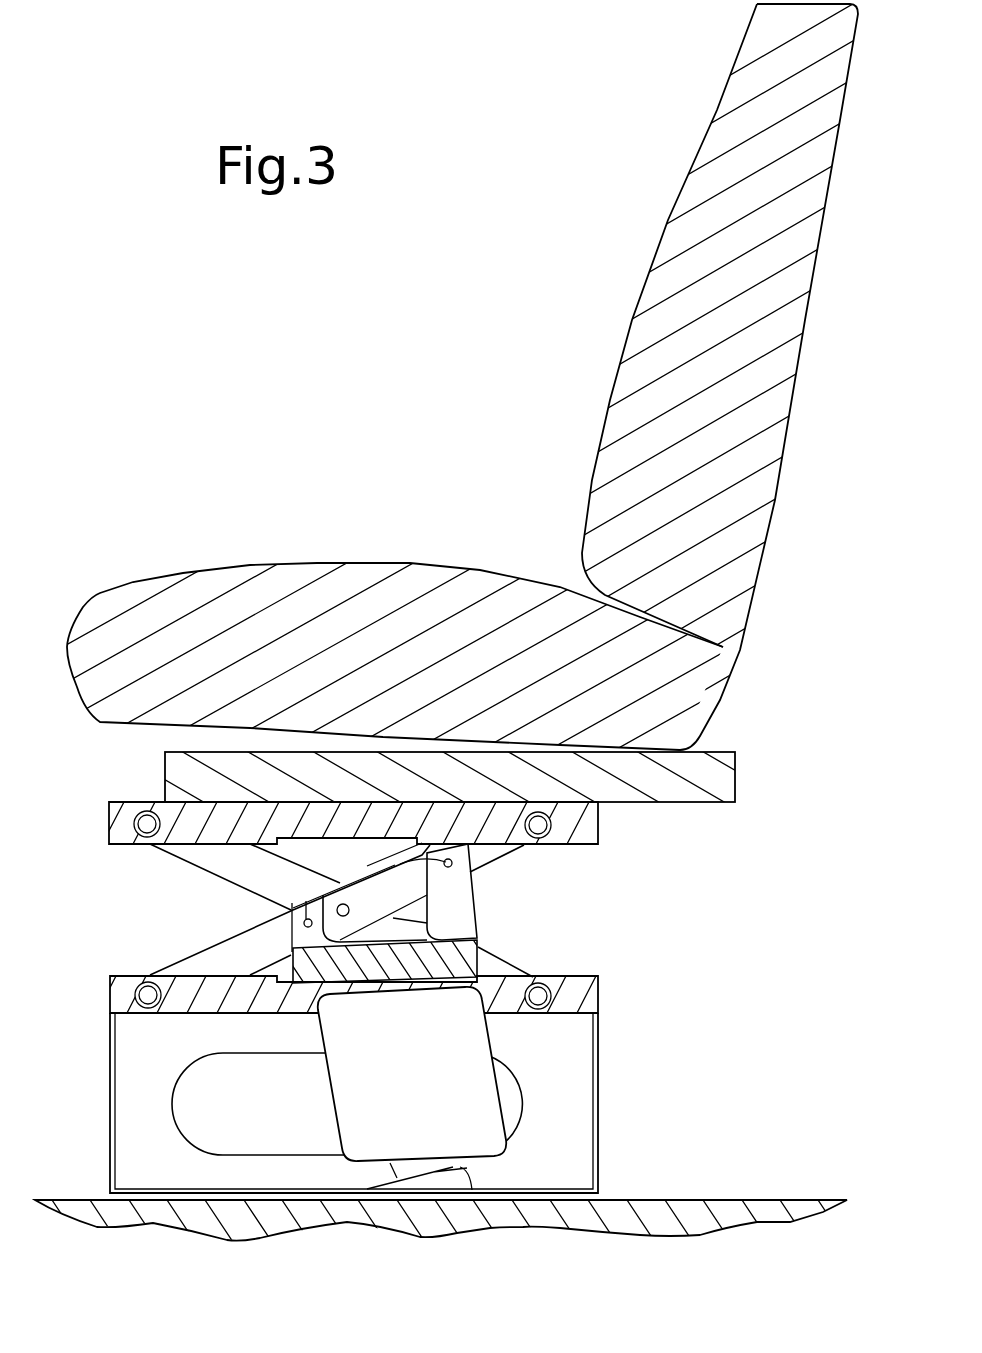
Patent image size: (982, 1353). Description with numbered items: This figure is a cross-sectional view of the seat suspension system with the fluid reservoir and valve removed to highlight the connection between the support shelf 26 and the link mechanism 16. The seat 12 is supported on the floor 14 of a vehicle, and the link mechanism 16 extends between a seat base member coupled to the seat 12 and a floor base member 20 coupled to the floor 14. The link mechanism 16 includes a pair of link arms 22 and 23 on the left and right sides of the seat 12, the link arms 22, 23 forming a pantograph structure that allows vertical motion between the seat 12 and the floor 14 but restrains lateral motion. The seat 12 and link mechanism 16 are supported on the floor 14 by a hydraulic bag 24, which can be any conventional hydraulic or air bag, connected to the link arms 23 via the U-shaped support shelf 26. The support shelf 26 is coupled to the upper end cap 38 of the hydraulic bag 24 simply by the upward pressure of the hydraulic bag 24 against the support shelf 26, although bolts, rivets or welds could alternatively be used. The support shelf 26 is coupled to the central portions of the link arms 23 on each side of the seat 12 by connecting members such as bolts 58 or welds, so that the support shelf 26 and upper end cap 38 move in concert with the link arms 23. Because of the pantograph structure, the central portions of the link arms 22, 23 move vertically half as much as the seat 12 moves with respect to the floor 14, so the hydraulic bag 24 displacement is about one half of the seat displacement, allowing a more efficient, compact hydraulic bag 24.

The seat 12 is at (640, 375).
The floor 14 is at (690, 1207).
The link mechanism 16 is at (500, 870).
The floor base member 20 is at (580, 1078).
The link arm 22 is at (220, 862).
The link arm 23 is at (208, 957).
The hydraulic bag 24 is at (353, 1110).
The support shelf 26 is at (482, 938).
The upper end cap 38 is at (420, 992).
The bolt 58 is at (342, 882).